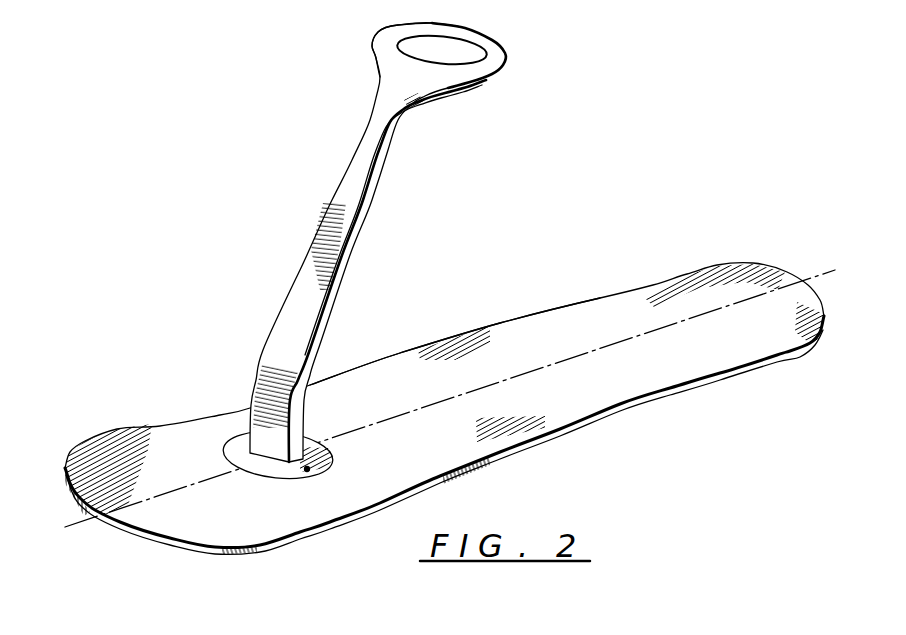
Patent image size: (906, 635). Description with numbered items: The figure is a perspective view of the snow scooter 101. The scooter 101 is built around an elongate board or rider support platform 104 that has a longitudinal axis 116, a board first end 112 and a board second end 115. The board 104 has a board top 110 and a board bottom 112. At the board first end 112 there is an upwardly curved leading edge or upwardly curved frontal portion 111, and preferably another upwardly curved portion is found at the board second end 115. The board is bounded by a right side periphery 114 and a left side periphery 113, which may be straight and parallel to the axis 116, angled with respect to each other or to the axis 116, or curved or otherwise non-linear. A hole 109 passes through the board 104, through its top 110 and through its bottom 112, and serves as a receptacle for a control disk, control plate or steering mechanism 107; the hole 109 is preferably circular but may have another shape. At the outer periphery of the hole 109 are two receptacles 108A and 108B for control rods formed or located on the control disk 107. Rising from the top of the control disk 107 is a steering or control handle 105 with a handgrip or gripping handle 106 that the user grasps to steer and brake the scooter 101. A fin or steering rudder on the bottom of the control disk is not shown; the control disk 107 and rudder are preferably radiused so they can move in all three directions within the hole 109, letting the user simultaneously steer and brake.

The scooter 101 is at (699, 398).
The board 104 is at (627, 312).
The control handle 105 is at (349, 180).
The gripping handle 106 is at (505, 56).
The control disk 107 is at (316, 472).
The receptacle 108A is at (326, 436).
The receptacle 108B is at (226, 468).
The hole 109 is at (270, 480).
The board top 110 is at (485, 435).
The upwardly curved frontal portion 111 is at (98, 447).
The board first end 112 is at (168, 516).
The left side periphery 113 is at (748, 369).
The right side periphery 114 is at (564, 307).
The board second end 115 is at (735, 282).
The longitudinal axis 116 is at (817, 275).